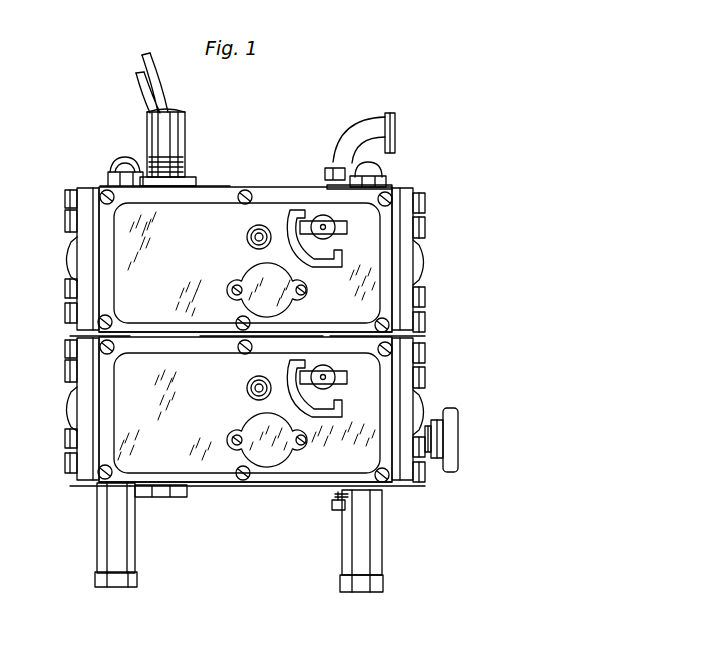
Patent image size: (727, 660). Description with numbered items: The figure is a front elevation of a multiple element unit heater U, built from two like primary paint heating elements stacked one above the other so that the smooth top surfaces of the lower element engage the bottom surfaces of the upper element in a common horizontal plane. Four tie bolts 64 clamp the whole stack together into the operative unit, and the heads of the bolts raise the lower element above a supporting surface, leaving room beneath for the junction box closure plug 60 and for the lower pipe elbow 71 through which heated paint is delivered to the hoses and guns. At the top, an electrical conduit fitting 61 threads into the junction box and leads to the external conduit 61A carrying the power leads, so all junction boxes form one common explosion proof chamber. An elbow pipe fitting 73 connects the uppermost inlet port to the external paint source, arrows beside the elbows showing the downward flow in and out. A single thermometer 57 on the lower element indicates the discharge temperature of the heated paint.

The multiple element unit heater U is at (265, 188).
The electrical conduit fitting 61 is at (190, 180).
The external conduit 61A is at (172, 142).
The elbow pipe fitting 73 is at (396, 126).
The thermometer 57 is at (465, 440).
The closure plug 60 is at (161, 498).
The pipe elbow 71 is at (405, 528).
The tie bolts 64 is at (97, 578).